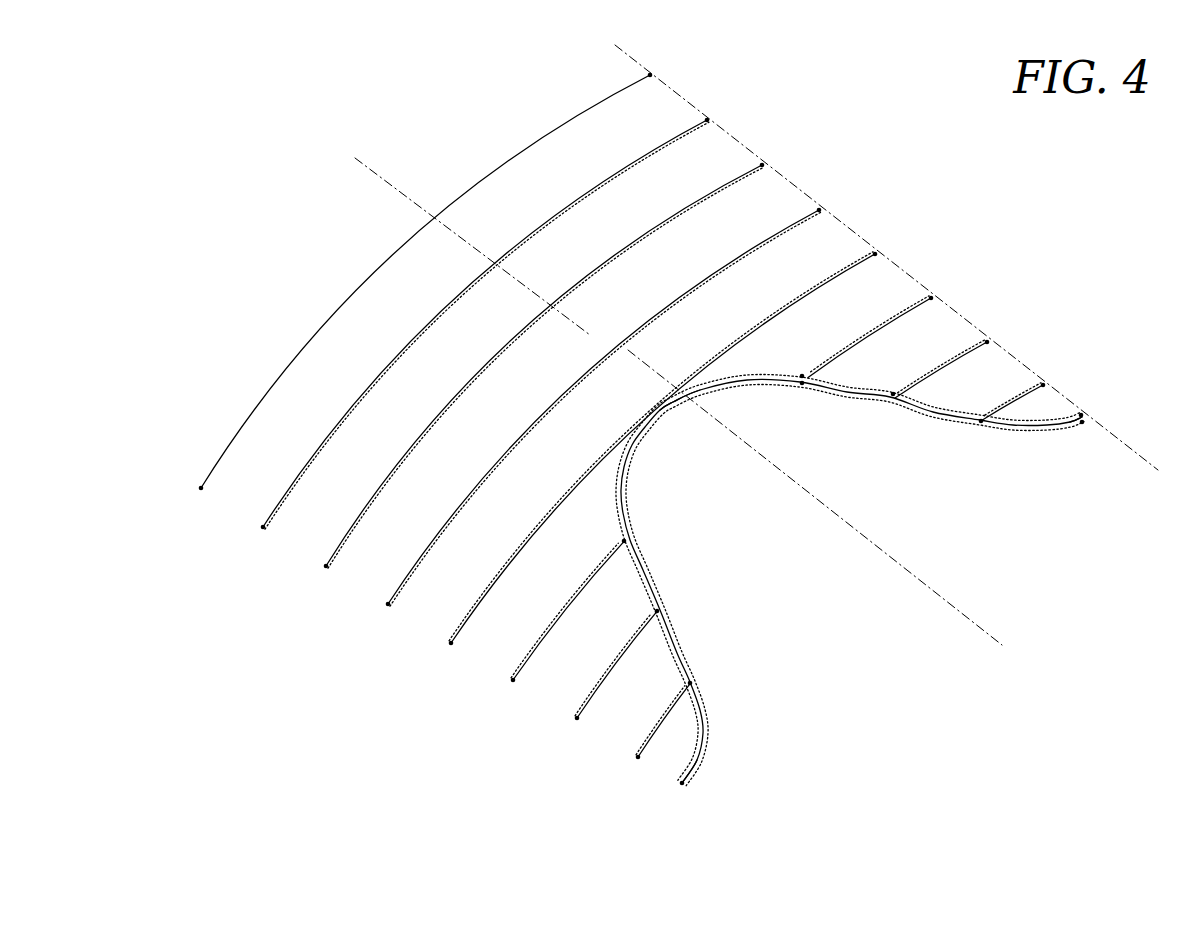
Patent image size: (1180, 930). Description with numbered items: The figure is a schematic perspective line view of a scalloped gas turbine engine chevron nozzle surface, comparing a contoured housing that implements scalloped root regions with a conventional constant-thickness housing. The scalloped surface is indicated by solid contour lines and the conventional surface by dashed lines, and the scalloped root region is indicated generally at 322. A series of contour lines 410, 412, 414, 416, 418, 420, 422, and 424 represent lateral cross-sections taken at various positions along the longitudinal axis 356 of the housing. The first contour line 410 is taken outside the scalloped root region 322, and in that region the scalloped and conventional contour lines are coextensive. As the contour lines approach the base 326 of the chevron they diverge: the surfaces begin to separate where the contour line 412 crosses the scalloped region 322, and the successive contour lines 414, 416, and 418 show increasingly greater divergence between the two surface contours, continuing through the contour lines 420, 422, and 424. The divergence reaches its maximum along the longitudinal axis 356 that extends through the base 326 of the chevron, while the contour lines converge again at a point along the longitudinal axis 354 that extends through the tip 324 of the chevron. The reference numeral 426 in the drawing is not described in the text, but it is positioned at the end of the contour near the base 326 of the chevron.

The scalloped root region 322 is at (595, 343).
The tip 324 is at (1117, 438).
The base 326 is at (673, 404).
The longitudinal axis 354 is at (802, 190).
The longitudinal axis 356 is at (927, 588).
The first contour line 410 is at (227, 460).
The contour line 412 is at (276, 513).
The contour line 414 is at (347, 543).
The contour line 416 is at (402, 588).
The contour line 418 is at (467, 626).
The contour line 420 is at (529, 663).
The contour line 422 is at (591, 698).
The contour line 424 is at (655, 734).
The airfoil tip 426 is at (694, 766).